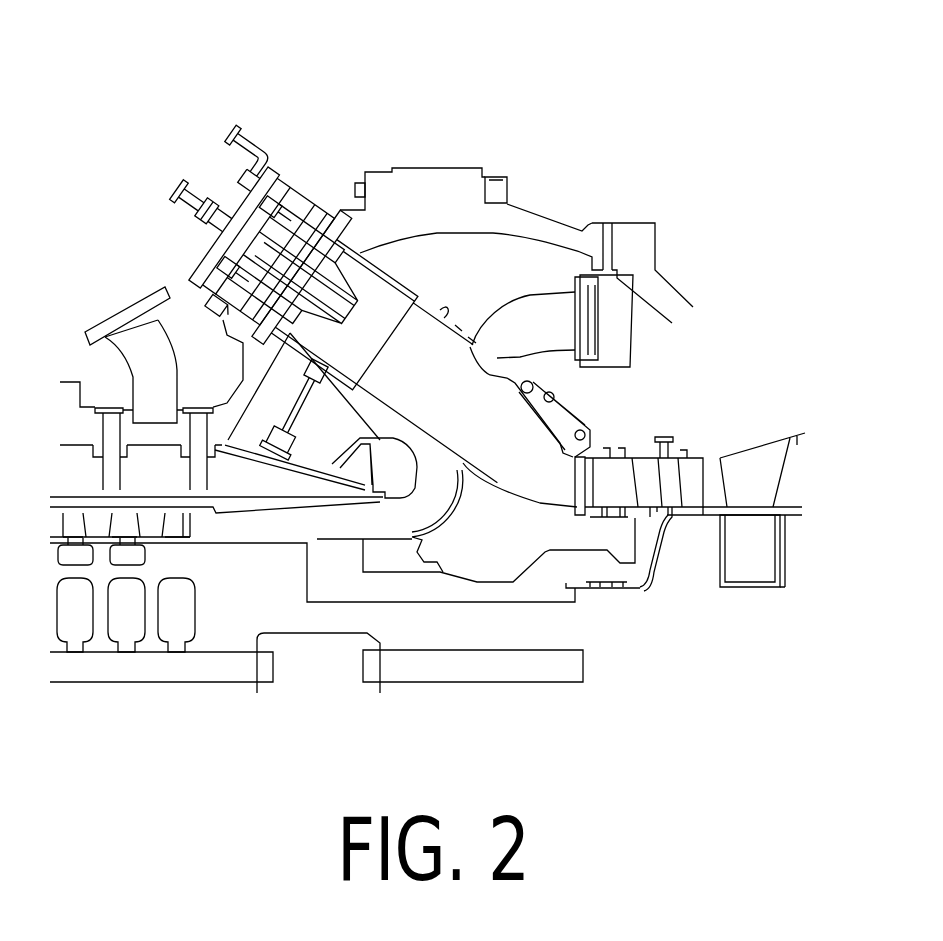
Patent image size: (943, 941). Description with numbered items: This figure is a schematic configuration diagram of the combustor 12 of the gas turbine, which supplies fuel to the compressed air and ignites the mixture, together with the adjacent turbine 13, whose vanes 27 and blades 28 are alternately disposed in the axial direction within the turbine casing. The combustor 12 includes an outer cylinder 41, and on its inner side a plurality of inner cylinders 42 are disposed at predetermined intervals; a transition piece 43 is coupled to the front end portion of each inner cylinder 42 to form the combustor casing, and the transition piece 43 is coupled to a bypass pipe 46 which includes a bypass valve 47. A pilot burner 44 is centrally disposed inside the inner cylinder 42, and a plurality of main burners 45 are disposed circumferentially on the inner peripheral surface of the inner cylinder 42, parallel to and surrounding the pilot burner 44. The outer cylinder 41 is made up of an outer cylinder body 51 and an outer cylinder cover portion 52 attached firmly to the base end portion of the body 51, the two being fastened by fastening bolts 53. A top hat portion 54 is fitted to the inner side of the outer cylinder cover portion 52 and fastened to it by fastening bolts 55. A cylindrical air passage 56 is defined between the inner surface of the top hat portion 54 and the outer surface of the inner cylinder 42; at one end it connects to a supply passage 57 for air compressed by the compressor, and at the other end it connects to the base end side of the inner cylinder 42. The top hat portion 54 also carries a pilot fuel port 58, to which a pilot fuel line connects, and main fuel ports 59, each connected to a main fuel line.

The combustor 12 is at (471, 73).
The turbine 13 is at (793, 420).
The vanes 27 is at (748, 470).
The blades 28 is at (690, 480).
The outer cylinder 41 is at (427, 167).
The inner cylinder 42 is at (317, 287).
The transition piece 43 is at (427, 333).
The pilot burner 44 is at (298, 230).
The main burners 45 is at (287, 217).
The bypass pipe 46 is at (520, 360).
The bypass valve 47 is at (603, 330).
The outer cylinder body 51 is at (573, 228).
The outer cylinder cover portion 52 is at (418, 175).
The fastening bolts 53 is at (500, 180).
The top hat portion 54 is at (187, 280).
The fastening bolts 55 is at (220, 320).
The air passage 56 is at (360, 253).
The supply passage 57 is at (538, 255).
The pilot fuel port 58 is at (172, 188).
The main fuel ports 59 is at (228, 137).